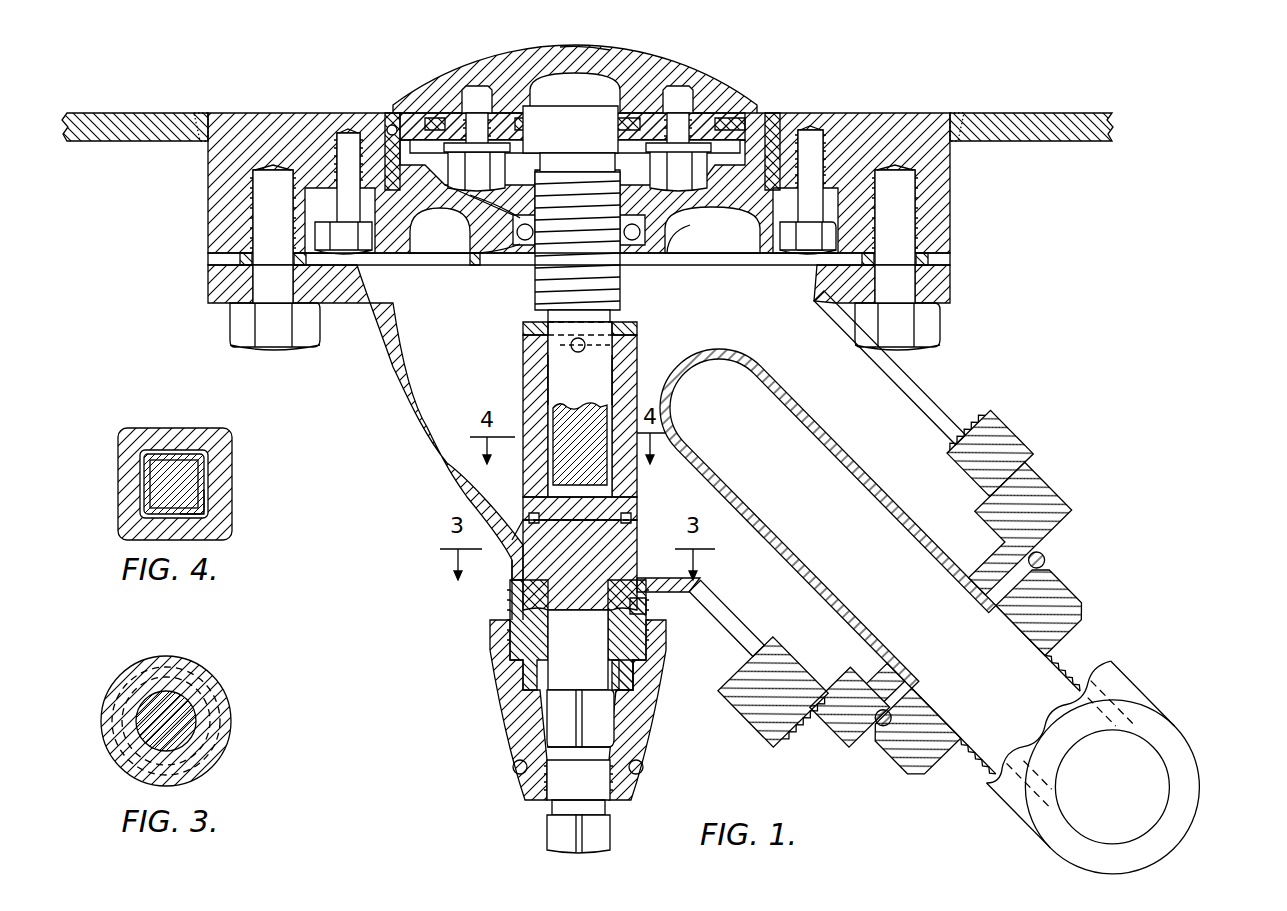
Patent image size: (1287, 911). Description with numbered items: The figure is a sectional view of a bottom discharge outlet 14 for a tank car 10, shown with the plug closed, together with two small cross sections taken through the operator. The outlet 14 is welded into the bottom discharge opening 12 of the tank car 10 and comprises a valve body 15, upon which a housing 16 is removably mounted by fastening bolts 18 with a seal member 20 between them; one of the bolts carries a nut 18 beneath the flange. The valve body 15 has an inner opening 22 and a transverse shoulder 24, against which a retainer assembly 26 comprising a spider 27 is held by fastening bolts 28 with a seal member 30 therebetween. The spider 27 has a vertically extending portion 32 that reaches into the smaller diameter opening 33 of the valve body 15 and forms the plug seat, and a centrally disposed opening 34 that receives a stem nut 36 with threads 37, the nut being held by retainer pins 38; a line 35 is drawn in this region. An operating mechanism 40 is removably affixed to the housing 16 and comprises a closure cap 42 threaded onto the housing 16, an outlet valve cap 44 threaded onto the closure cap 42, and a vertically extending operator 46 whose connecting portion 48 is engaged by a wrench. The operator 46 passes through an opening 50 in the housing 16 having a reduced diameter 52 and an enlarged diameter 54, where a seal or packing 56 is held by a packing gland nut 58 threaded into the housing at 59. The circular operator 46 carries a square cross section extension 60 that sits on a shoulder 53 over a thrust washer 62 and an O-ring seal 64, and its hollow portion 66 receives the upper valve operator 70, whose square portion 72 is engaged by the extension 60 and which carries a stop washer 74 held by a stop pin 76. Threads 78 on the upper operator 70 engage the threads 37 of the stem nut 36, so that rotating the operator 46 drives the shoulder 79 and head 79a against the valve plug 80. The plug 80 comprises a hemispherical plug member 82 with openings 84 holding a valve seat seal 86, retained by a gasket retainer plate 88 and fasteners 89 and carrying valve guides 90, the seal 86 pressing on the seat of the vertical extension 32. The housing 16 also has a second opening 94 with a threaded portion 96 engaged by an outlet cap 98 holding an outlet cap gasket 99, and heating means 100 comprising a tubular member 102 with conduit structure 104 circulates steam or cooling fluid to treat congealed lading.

In FIG. 1, the tank car 10 is at (1068, 110).
In FIG. 1, the bottom discharge opening 12 is at (914, 112).
In FIG. 1, the bottom discharge outlet 14 is at (958, 404).
In FIG. 1, the valve body 15 is at (955, 208).
In FIG. 1, the housing 16 is at (422, 424).
In FIG. 1, the fastening bolts 18 is at (232, 323).
In FIG. 1, the seal member 20 is at (956, 259).
In FIG. 1, the inner opening 22 is at (832, 266).
In FIG. 1, the transverse shoulder 24 is at (836, 187).
In FIG. 1, the retainer assembly 26 is at (757, 232).
In FIG. 1, the spider 27 is at (705, 252).
In FIG. 1, the fastening bolts 28 is at (816, 133).
In FIG. 1, the seal member 30 is at (776, 130).
In FIG. 1, the vertically extending portion 32 is at (402, 118).
In FIG. 1, the smaller diameter opening 33 is at (388, 128).
In FIG. 1, the centrally disposed opening 34 is at (634, 246).
In FIG. 1, the diaphragm 35 is at (498, 268).
In FIG. 1, the stem nut 36 is at (522, 246).
In FIG. 1, the threads 37 is at (462, 238).
In FIG. 1, the retainer pins 38 is at (492, 240).
In FIG. 1, the operating mechanism 40 is at (556, 720).
In FIG. 3, the operating mechanism 40 is at (218, 674).
In FIG. 1, the closure cap 42 is at (500, 677).
In FIG. 1, the outlet valve cap 44 is at (546, 840).
In FIG. 1, the operator 46 is at (512, 594).
In FIG. 3, the operator 46 is at (195, 715).
In FIG. 1, the connecting portion 48 is at (607, 731).
In FIG. 1, the opening 50 is at (480, 483).
In FIG. 1, the reduced diameter 52 is at (556, 560).
In FIG. 1, the shoulder 53 is at (526, 518).
In FIG. 1, the enlarged diameter 54 is at (652, 618).
In FIG. 1, the seal or packing 56 is at (646, 607).
In FIG. 3, the seal or packing 56 is at (210, 705).
In FIG. 1, the packing gland nut 58 is at (646, 668).
In FIG. 1, the threaded engagement 59 is at (610, 647).
In FIG. 1, the square cross section extension 60 is at (522, 376).
In FIG. 4, the square cross section extension 60 is at (232, 462).
In FIG. 1, the thrust washer 62 is at (640, 526).
In FIG. 1, the O-ring seal 64 is at (641, 512).
In FIG. 4, the hollow portion or opening 66 is at (204, 492).
In FIG. 1, the upper valve operator 70 is at (576, 393).
In FIG. 4, the upper valve operator 70 is at (166, 462).
In FIG. 1, the square cross section portion 72 is at (592, 451).
In FIG. 4, the square cross section portion 72 is at (175, 460).
In FIG. 1, the stop washer 74 is at (640, 330).
In FIG. 1, the stop pin 76 is at (600, 346).
In FIG. 1, the threads 78 is at (571, 214).
In FIG. 1, the shoulder 79 is at (592, 140).
In FIG. 1, the head 79a is at (612, 105).
In FIG. 1, the valve plug 80 is at (738, 79).
In FIG. 1, the plug member 82 is at (606, 56).
In FIG. 1, the openings 84 is at (446, 100).
In FIG. 1, the valve seat seal 86 is at (428, 108).
In FIG. 1, the gasket retainer plate 88 is at (504, 130).
In FIG. 1, the fasteners 89 is at (472, 92).
In FIG. 1, the valve guides 90 is at (426, 240).
In FIG. 1, the second opening 94 is at (911, 550).
In FIG. 1, the threaded portion 96 is at (992, 438).
In FIG. 1, the outlet cap 98 is at (1047, 472).
In FIG. 1, the outlet cap gasket 99 is at (1044, 512).
In FIG. 1, the heating means 100 is at (1102, 619).
In FIG. 1, the tubular member 102 is at (907, 530).
In FIG. 1, the conduit structure 104 is at (1203, 760).